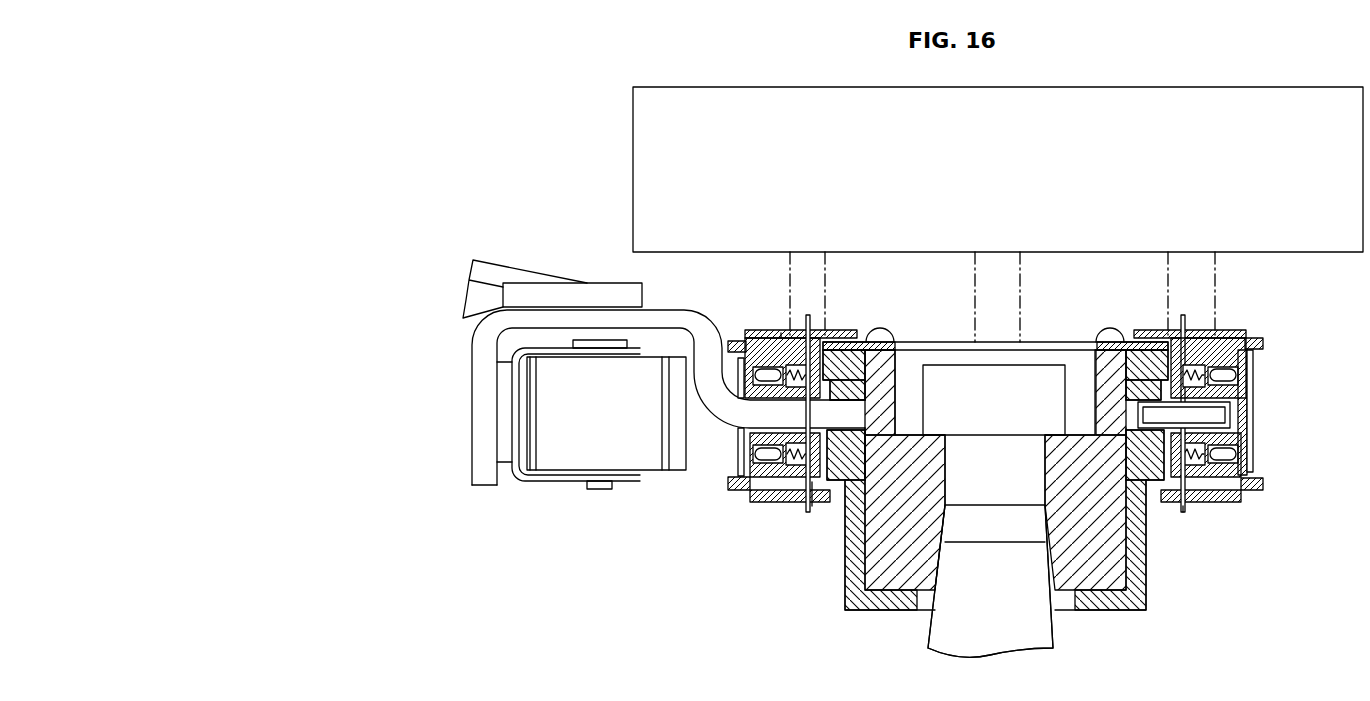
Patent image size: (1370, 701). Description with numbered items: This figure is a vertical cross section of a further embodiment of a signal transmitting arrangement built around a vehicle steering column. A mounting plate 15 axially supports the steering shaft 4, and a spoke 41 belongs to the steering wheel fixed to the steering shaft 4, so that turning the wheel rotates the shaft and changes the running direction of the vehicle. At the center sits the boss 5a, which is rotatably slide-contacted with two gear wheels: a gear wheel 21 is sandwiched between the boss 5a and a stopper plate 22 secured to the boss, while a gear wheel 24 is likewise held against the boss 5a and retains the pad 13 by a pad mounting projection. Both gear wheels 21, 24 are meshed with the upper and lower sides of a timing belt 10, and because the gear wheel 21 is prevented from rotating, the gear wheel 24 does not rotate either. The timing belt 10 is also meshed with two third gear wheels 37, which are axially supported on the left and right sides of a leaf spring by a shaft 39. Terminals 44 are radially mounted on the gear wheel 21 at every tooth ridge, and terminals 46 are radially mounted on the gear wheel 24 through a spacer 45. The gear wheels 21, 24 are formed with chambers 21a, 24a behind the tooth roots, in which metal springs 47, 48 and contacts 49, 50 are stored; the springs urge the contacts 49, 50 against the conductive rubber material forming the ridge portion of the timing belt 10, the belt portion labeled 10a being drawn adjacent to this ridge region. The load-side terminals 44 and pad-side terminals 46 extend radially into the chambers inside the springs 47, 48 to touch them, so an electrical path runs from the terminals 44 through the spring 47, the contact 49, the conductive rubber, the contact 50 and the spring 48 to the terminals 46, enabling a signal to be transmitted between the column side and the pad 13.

The pad 13 is at (1168, 104).
The spoke 41 is at (500, 274).
The shaft 39 is at (600, 340).
The third gear wheel 37 is at (580, 455).
The mounting plate 15 is at (482, 427).
The gear wheel 21 is at (748, 450).
The chamber 21a is at (1252, 462).
The gear wheel 24 is at (1250, 373).
The chamber 24a is at (843, 330).
The timing belt 10 is at (1254, 401).
The plate portion 10a is at (1258, 430).
The terminal 46 is at (812, 320).
The metal spring 48 is at (781, 333).
The contact 50 is at (746, 342).
The contact 49 is at (763, 460).
The metal spring 47 is at (793, 480).
The spacer 45 is at (812, 507).
The terminal 44 is at (1183, 508).
The boss 5a is at (892, 580).
The stopper plate 22 is at (1146, 603).
The steering shaft 4 is at (1046, 640).